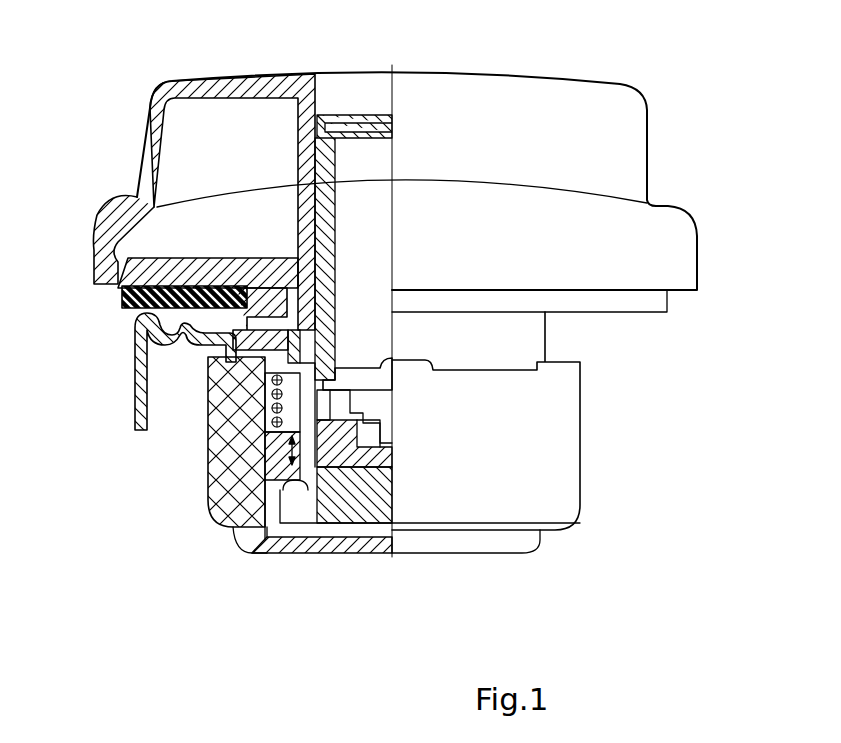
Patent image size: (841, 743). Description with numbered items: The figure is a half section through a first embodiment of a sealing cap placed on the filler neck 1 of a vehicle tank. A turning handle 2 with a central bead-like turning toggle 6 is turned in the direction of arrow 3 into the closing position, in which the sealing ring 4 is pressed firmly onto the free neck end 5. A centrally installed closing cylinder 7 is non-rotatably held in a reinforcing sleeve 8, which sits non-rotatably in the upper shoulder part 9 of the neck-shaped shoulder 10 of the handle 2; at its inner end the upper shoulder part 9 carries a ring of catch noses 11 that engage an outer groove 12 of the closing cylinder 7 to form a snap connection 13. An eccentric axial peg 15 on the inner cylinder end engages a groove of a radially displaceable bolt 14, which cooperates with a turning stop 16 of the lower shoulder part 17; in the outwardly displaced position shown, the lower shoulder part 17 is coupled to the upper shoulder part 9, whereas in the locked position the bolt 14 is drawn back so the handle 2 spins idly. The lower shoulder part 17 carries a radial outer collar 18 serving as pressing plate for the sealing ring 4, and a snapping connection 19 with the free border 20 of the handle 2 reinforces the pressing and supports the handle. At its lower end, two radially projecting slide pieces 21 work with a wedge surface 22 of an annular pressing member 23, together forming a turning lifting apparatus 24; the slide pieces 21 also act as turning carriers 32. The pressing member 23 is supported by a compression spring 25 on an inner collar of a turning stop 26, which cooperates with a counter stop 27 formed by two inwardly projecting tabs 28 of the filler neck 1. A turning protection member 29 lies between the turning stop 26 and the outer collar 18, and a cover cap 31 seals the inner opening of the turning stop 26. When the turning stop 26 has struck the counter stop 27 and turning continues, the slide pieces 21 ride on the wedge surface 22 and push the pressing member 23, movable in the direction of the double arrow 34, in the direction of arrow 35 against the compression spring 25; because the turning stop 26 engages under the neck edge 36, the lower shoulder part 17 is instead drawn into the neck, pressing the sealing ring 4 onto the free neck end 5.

The filler neck 1 is at (137, 393).
The turning handle 2 is at (670, 234).
The arrow 3 is at (378, 580).
The sealing ring 4 is at (130, 308).
The free neck end 5 is at (137, 356).
The turning toggle 6 is at (613, 100).
The closing cylinder 7 is at (378, 177).
The reinforcing sleeve 8 is at (335, 178).
The upper shoulder part 9 is at (307, 162).
The neck-shaped shoulder 10 is at (283, 185).
The catch noses 11 is at (395, 290).
The outer groove 12 is at (380, 365).
The snap connection 13 is at (345, 363).
The bolt 14 is at (390, 457).
The peg 15 is at (388, 427).
The turning stop 16 is at (323, 405).
The lower shoulder part 17 is at (292, 220).
The radial outer collar 18 is at (193, 265).
The snapping connection 19 is at (98, 242).
The free border 20 is at (97, 270).
The slide pieces 21 is at (298, 522).
The wedge surface 22 is at (265, 505).
The pressing member 23 is at (270, 480).
The turning lifting apparatus 24 is at (257, 553).
The compression spring 25 is at (210, 460).
The turning stop 26 is at (235, 410).
The counter stop 27 is at (208, 382).
The tabs 28 is at (210, 347).
The turning protection member 29 is at (260, 282).
The cover cap 31 is at (380, 555).
The turning carriers 32 is at (282, 495).
The double arrow 34 is at (305, 470).
The arrow 35 is at (460, 470).
The neck edge 36 is at (300, 340).